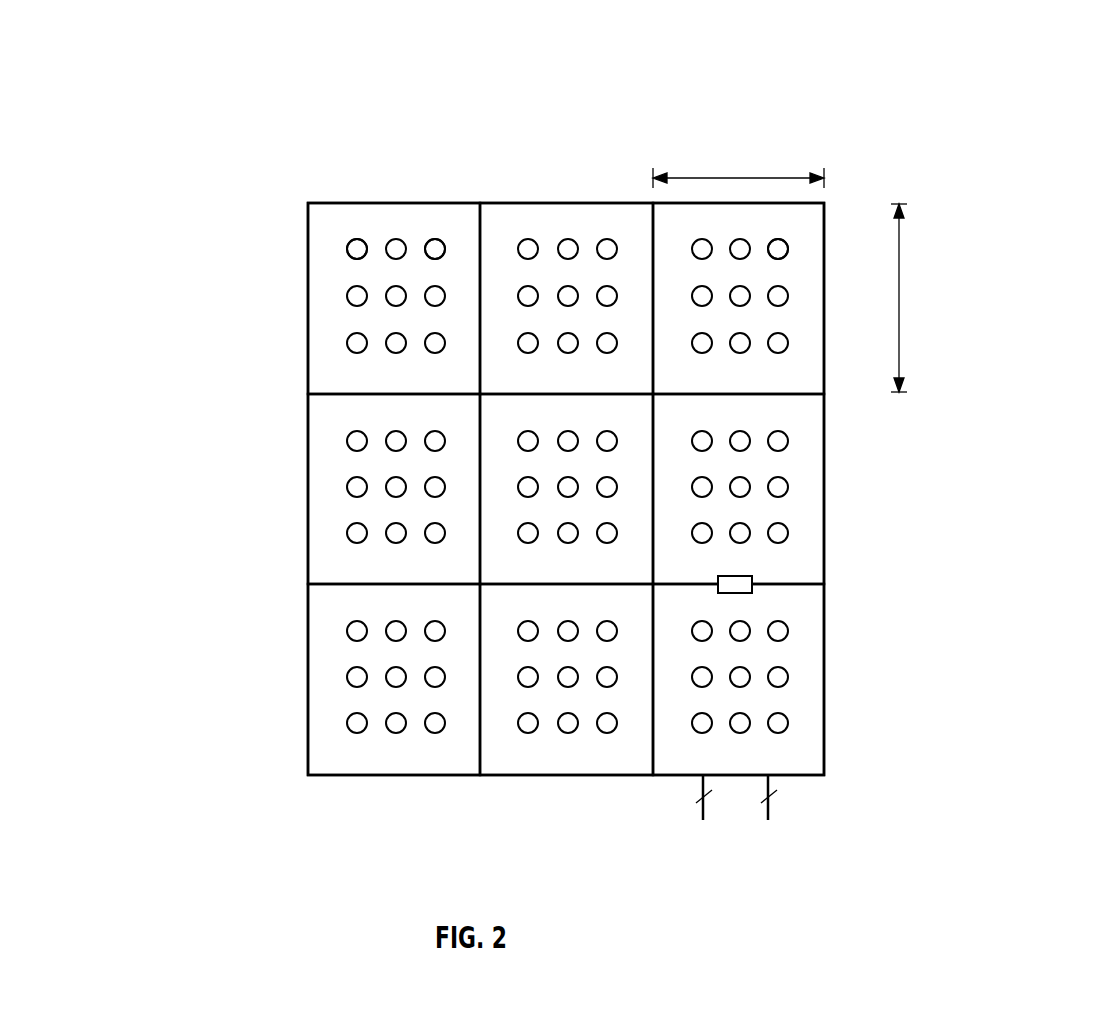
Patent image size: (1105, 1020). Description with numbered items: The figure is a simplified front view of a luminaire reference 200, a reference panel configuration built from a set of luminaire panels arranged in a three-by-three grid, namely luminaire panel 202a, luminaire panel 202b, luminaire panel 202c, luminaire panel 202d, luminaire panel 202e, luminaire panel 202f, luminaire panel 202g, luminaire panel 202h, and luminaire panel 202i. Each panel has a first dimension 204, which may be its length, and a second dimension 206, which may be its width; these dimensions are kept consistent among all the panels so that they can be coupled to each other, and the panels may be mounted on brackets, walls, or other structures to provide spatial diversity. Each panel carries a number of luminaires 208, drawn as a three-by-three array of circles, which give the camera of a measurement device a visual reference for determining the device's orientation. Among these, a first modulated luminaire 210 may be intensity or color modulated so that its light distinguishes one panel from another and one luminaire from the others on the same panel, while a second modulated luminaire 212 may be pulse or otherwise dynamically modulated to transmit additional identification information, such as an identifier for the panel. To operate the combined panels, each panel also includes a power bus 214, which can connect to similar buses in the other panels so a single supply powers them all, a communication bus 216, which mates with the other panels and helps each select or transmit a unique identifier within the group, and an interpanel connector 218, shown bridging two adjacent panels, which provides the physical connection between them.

The luminaire reference 200 is at (993, 63).
The luminaire panel 202a is at (308, 296).
The luminaire panel 202b is at (308, 492).
The luminaire panel 202c is at (308, 685).
The luminaire panel 202d is at (552, 202).
The luminaire panel 202e is at (480, 418).
The luminaire panel 202f is at (563, 775).
The luminaire panel 202g is at (824, 372).
The luminaire panel 202h is at (826, 522).
The luminaire panel 202i is at (826, 718).
The first dimension 204 is at (899, 355).
The second dimension 206 is at (799, 174).
The luminaires 208 is at (789, 252).
The first modulated luminaire 210 is at (350, 240).
The second modulated luminaire 212 is at (441, 240).
The power bus 214 is at (703, 830).
The communication bus 216 is at (768, 830).
The interpanel connector 218 is at (752, 592).